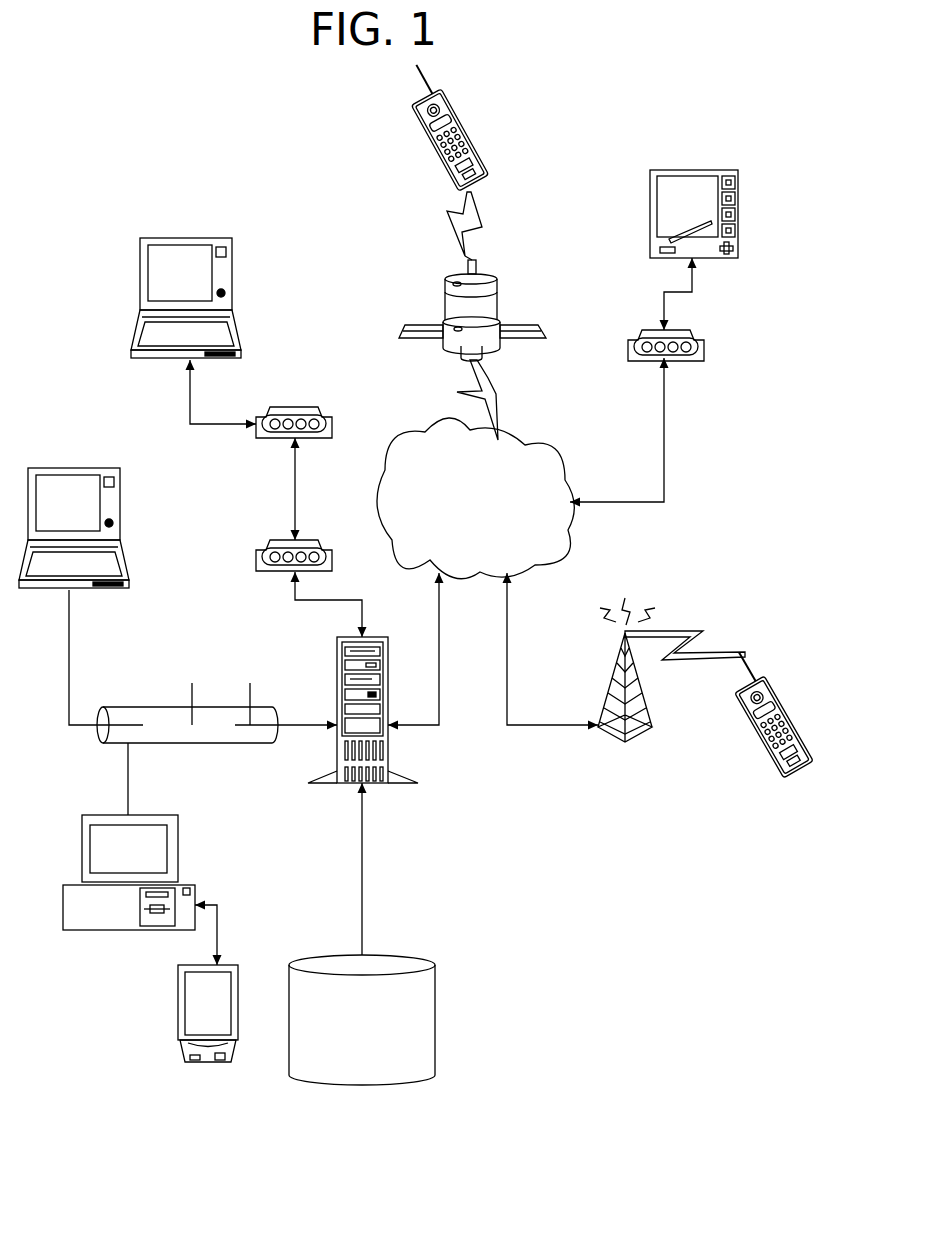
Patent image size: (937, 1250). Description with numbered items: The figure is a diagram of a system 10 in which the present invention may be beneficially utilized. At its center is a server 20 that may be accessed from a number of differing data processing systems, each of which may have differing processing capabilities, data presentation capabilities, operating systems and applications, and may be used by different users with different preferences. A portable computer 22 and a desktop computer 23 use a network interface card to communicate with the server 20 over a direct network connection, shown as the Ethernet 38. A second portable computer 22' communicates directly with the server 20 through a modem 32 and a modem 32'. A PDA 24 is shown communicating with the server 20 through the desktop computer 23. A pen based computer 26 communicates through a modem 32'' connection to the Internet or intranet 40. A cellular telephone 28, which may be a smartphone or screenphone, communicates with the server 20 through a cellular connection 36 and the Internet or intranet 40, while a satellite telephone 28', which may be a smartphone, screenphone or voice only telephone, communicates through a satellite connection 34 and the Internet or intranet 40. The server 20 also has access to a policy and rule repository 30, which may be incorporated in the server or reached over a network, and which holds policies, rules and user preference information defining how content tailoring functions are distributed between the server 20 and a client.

The system 10 is at (222, 124).
The server 20 is at (337, 681).
The portable computer 22 is at (74, 515).
The portable computer 22' is at (186, 284).
The desktop computer 23 is at (121, 930).
The PDA 24 is at (180, 1020).
The pen based computer 26 is at (706, 170).
The cellular telephone 28 is at (768, 712).
The satellite telephone 28' is at (442, 125).
The policy and rule repository 30 is at (437, 1020).
The modem 32 is at (306, 405).
The modem 32' is at (310, 534).
The modem 32'' is at (687, 361).
The satellite connection 34 is at (498, 291).
The cellular connection 36 is at (612, 738).
The Ethernet 38 is at (158, 707).
The Internet or intranet 40 is at (532, 452).